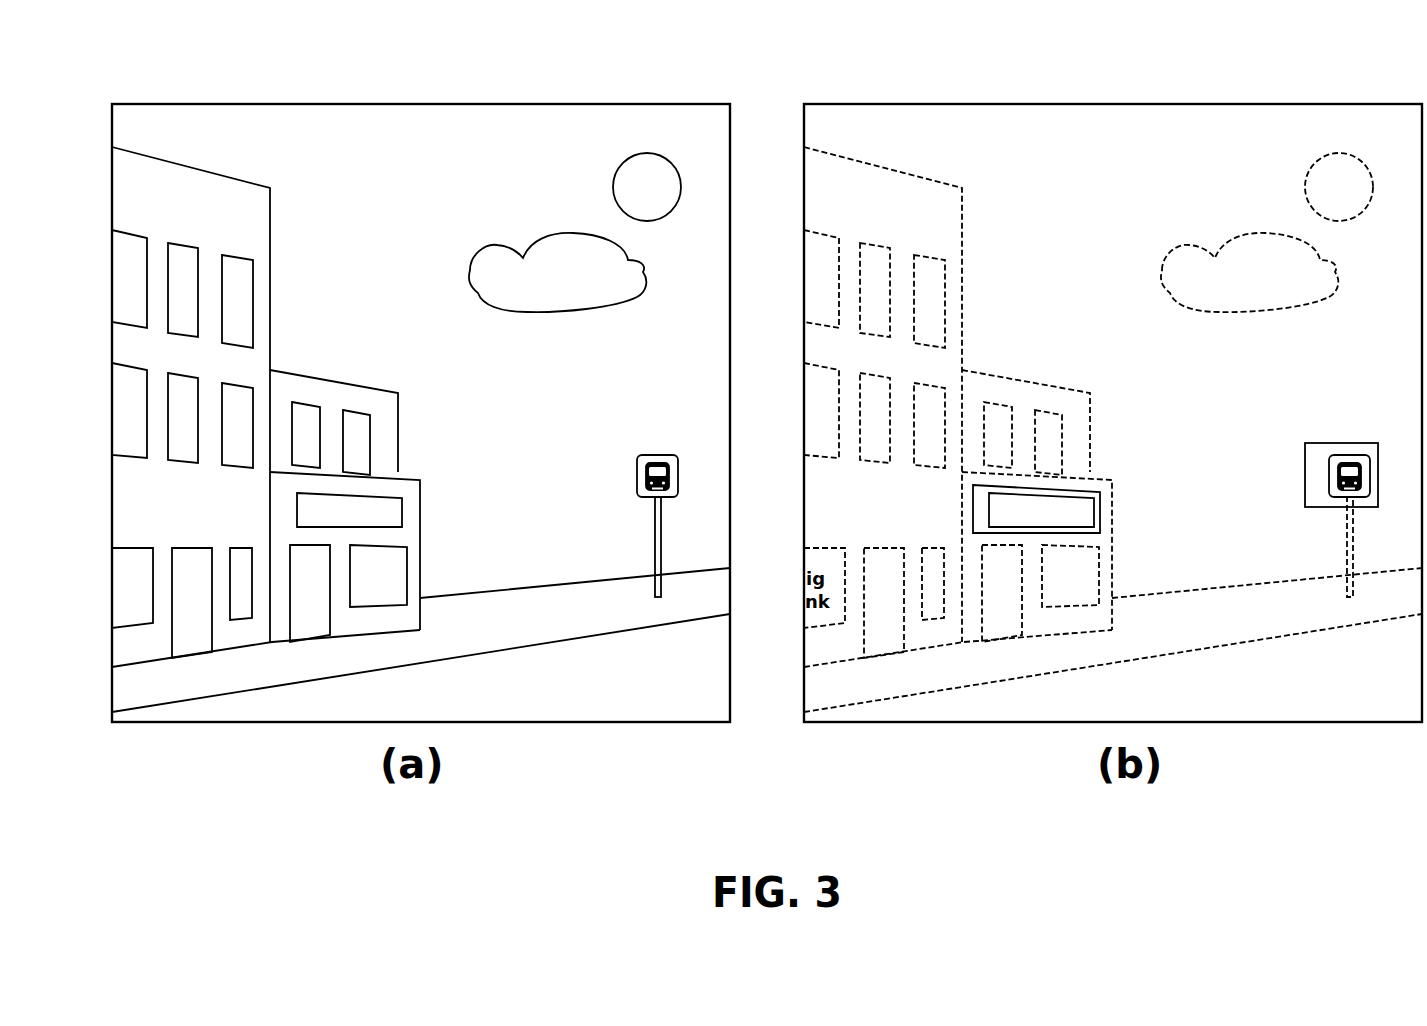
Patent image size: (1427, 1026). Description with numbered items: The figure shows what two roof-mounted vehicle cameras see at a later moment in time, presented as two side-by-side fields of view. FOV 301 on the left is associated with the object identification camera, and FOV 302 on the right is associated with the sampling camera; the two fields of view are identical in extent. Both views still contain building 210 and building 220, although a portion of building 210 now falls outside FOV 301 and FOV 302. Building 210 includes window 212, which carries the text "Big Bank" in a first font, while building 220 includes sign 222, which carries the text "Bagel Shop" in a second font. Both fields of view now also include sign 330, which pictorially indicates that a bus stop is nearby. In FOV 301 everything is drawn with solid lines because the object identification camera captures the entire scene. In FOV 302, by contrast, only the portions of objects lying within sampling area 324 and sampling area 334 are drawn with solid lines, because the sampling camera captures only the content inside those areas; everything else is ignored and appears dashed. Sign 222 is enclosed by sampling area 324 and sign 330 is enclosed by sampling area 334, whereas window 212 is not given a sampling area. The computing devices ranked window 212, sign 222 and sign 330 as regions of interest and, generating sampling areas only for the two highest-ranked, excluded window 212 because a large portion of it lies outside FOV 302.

The FOV 301 is at (420, 104).
The FOV 302 is at (1113, 374).
The building 210 is at (272, 253).
The window 212 is at (130, 547).
The building 220 is at (300, 372).
The sign 222 is at (355, 495).
The sign 330 is at (637, 476).
The sampling area 324 is at (1084, 509).
The sampling area 334 is at (1306, 475).